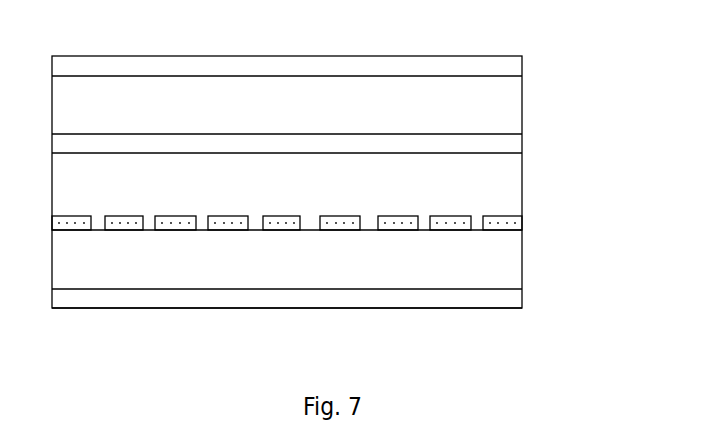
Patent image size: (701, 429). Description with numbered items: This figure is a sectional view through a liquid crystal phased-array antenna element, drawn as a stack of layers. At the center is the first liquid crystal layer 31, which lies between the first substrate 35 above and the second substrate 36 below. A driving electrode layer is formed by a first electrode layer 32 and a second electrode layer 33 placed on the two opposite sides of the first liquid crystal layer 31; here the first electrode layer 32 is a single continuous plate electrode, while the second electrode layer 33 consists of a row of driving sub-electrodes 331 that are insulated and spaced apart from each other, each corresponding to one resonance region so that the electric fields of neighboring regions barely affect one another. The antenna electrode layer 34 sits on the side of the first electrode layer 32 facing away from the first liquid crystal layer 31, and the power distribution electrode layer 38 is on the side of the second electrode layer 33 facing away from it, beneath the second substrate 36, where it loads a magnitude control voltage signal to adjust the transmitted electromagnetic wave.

The first liquid crystal layer 31 is at (502, 182).
The first electrode layer 32 is at (473, 148).
The second electrode layer 33 is at (321, 281).
The driving sub-electrodes 331 is at (443, 229).
The antenna electrode layer 34 is at (483, 70).
The first substrate 35 is at (358, 103).
The second substrate 36 is at (508, 266).
The power distribution electrode layer 38 is at (510, 300).